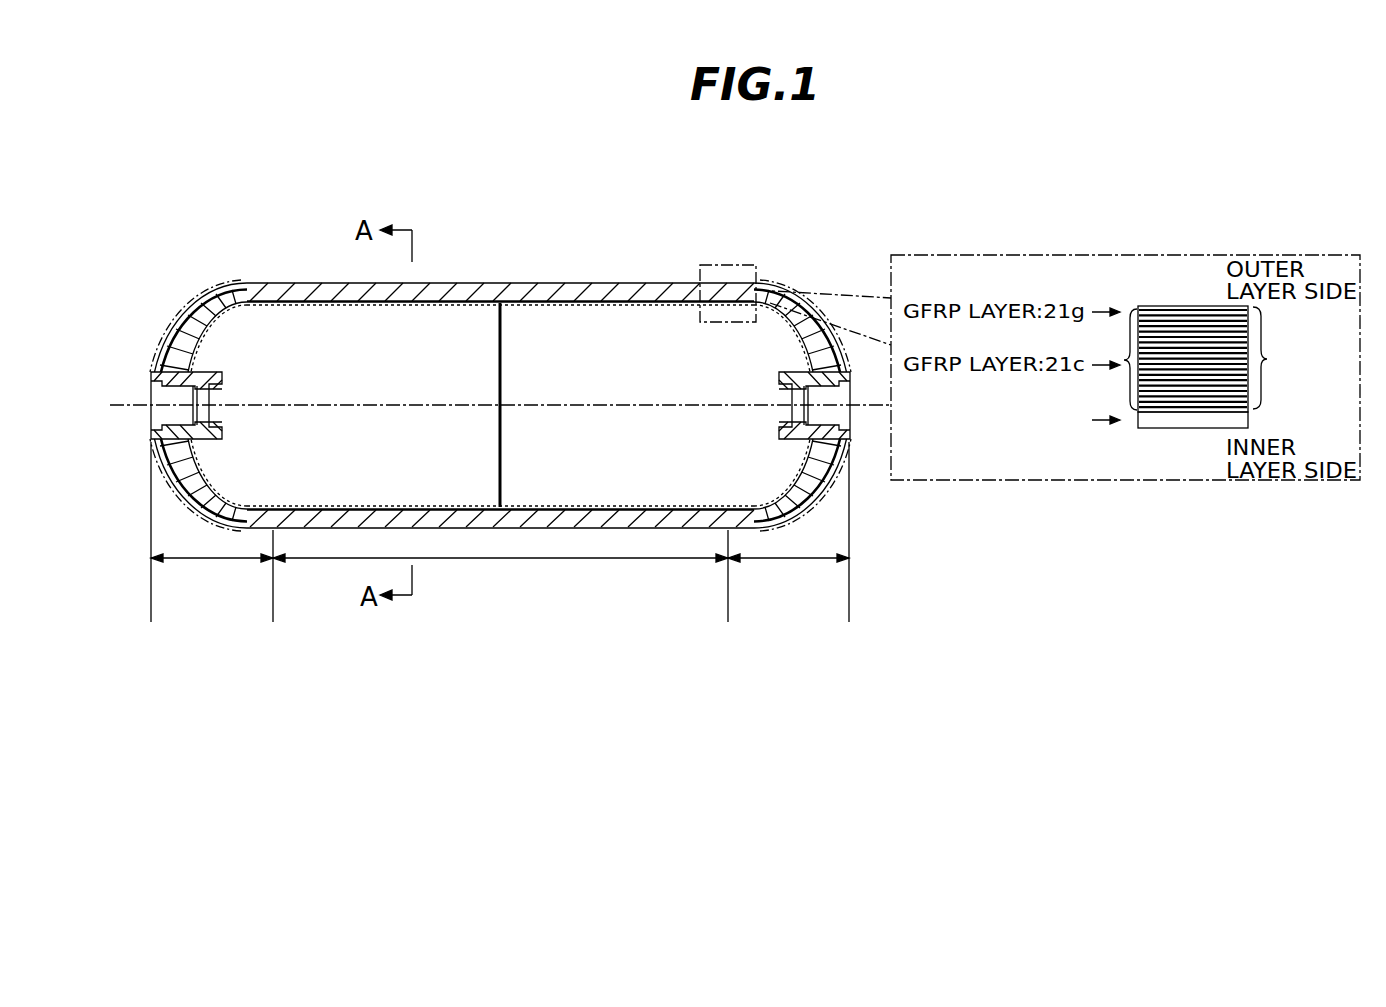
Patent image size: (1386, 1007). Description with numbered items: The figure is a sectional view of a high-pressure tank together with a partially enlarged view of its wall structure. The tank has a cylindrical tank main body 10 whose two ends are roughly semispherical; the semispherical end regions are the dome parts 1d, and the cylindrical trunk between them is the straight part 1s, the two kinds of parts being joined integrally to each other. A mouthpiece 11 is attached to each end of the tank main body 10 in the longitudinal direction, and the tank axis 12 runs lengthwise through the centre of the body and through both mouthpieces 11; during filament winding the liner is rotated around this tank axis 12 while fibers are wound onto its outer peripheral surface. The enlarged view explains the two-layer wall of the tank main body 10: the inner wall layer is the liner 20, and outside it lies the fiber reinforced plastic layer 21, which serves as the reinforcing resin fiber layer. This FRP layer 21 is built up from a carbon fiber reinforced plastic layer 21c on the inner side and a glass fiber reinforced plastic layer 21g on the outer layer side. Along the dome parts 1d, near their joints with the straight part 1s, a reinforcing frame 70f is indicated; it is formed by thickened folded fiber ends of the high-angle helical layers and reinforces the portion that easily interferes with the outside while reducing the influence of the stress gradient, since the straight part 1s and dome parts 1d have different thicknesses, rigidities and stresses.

The tank main body 10 is at (352, 278).
The mouthpiece 11 is at (203, 370).
The tank axis 12 is at (342, 406).
The liner 20 is at (1091, 421).
The Fiber Reinforced Plastic (FRP) layer 21 is at (1216, 359).
The Glass Fiber Reinforced Plastic (GFRP) layer 21g is at (474, 292).
The Carbon Fiber Reinforced Plastic (CFRP) layer 21c is at (608, 296).
The reinforcing frame 70f is at (236, 276).
The dome part 1d is at (500, 532).
The straight part 1s is at (500, 576).